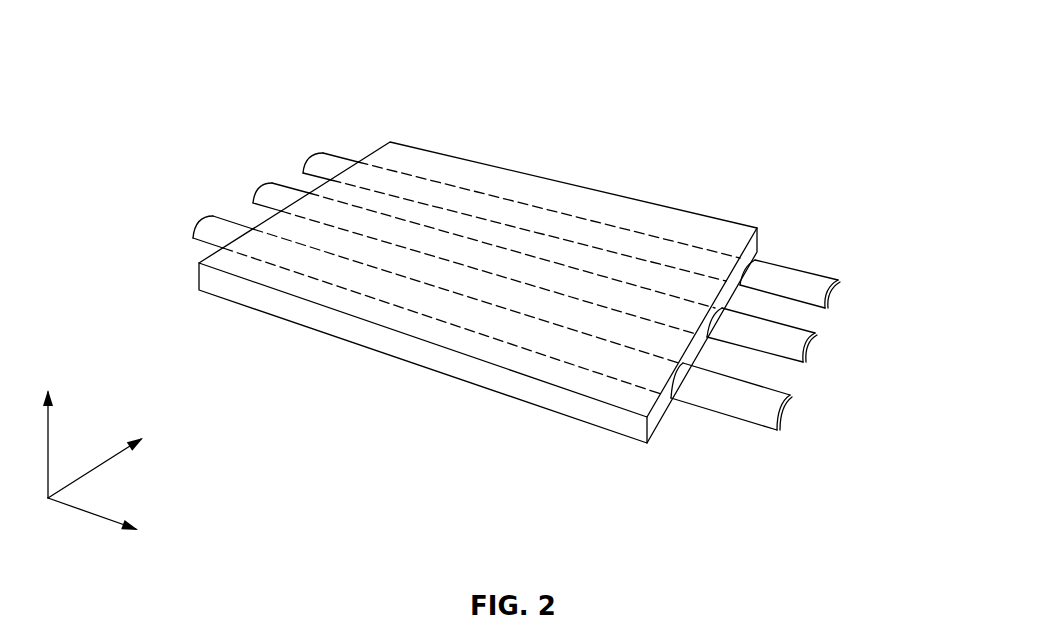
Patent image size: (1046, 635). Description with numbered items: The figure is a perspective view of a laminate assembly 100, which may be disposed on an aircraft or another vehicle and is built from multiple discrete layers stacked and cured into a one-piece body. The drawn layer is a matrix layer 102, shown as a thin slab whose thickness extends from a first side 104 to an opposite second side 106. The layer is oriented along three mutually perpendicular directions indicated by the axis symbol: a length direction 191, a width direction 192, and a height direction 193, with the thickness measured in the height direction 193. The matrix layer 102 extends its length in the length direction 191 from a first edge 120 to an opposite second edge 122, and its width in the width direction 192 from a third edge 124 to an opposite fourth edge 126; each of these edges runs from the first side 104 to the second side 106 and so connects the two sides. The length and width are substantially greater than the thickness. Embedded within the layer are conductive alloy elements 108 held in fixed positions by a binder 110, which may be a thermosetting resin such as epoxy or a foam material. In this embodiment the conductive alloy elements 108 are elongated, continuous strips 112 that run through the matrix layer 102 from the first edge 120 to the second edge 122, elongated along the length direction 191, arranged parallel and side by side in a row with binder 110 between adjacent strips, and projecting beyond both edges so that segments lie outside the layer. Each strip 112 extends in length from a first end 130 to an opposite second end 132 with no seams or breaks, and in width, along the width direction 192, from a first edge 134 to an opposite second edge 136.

The laminate assembly 100 is at (343, 106).
The matrix layer 102 is at (174, 263).
The first side 104 is at (525, 363).
The second side 106 is at (577, 418).
The conductive alloy elements 108 is at (790, 278).
The binder 110 is at (698, 228).
The strips 112 is at (820, 280).
The first edge 120 is at (197, 263).
The second edge 122 is at (660, 418).
The third edge 124 is at (320, 318).
The fourth edge 126 is at (757, 252).
The first end 130 is at (256, 190).
The second end 132 is at (806, 350).
The first edge of strip 134 is at (789, 398).
The second edge of strip 136 is at (818, 335).
The length direction 191 is at (90, 517).
The width direction 192 is at (115, 460).
The height direction 193 is at (50, 432).